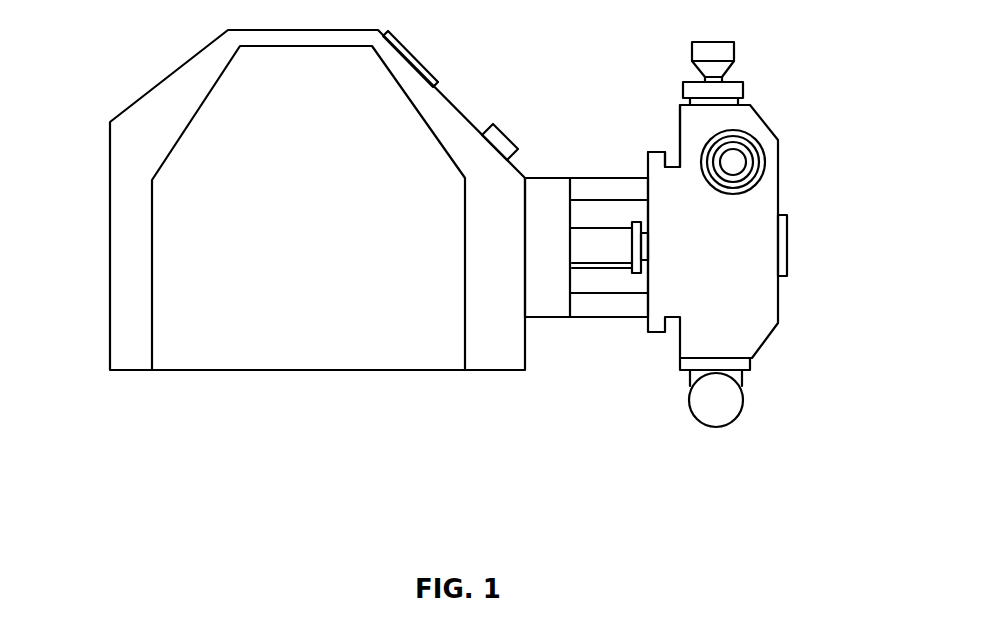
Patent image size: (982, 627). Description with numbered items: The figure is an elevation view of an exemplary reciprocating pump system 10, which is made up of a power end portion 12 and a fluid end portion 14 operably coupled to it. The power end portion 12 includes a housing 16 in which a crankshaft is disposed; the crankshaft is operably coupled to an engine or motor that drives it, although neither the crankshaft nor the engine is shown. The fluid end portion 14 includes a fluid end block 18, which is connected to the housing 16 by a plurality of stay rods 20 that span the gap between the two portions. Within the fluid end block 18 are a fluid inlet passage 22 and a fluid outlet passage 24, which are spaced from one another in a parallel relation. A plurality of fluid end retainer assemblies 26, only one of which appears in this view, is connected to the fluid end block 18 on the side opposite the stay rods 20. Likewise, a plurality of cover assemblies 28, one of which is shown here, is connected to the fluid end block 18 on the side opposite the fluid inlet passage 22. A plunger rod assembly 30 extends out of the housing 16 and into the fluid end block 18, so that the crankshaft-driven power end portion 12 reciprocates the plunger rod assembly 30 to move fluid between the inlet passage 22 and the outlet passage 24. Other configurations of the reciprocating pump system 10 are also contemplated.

The reciprocating pump system 10 is at (872, 106).
The power end portion 12 is at (101, 261).
The fluid end portion 14 is at (788, 297).
The housing 16 is at (170, 76).
The fluid end block 18 is at (678, 136).
The stay rods 20 is at (600, 177).
The fluid inlet passage 22 is at (728, 405).
The fluid outlet passage 24 is at (733, 162).
The fluid end retainer assembly 26 is at (789, 240).
The cover assembly 28 is at (745, 90).
The plunger rod assembly 30 is at (613, 268).